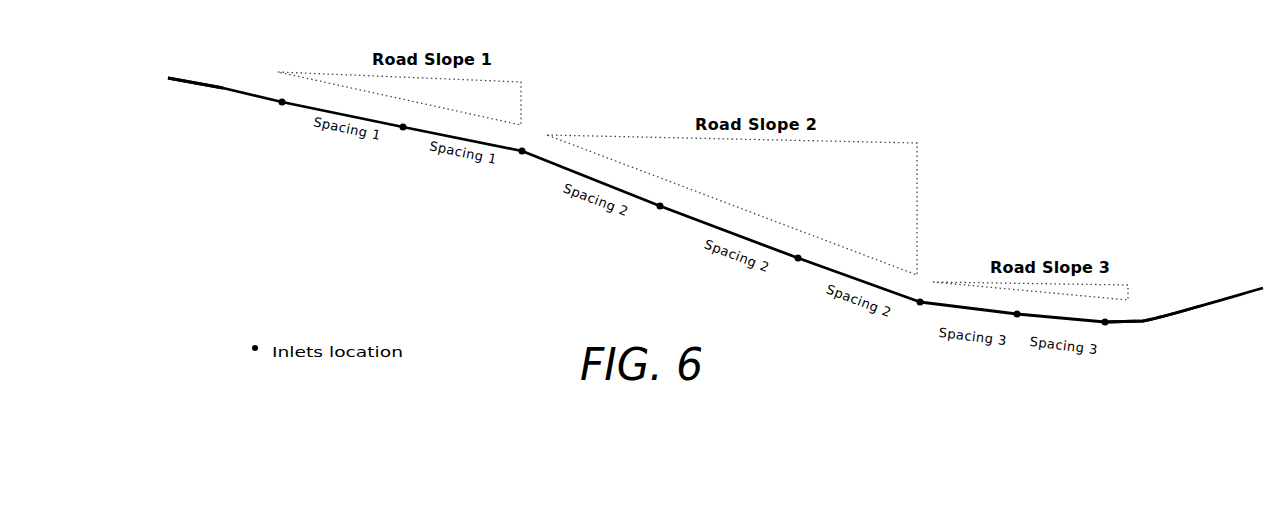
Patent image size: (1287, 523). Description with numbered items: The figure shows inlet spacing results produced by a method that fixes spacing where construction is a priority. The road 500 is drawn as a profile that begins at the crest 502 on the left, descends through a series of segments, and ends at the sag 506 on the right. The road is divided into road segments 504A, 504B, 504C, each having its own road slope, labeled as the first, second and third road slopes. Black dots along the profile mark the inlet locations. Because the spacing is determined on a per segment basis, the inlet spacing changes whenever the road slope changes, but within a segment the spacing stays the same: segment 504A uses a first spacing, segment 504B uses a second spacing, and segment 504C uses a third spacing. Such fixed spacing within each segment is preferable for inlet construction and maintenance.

The road 500 is at (223, 86).
The crest 502 is at (180, 113).
The road segment 504A is at (302, 128).
The road segment 504B is at (668, 231).
The road segment 504C is at (1003, 344).
The sag 506 is at (1152, 352).